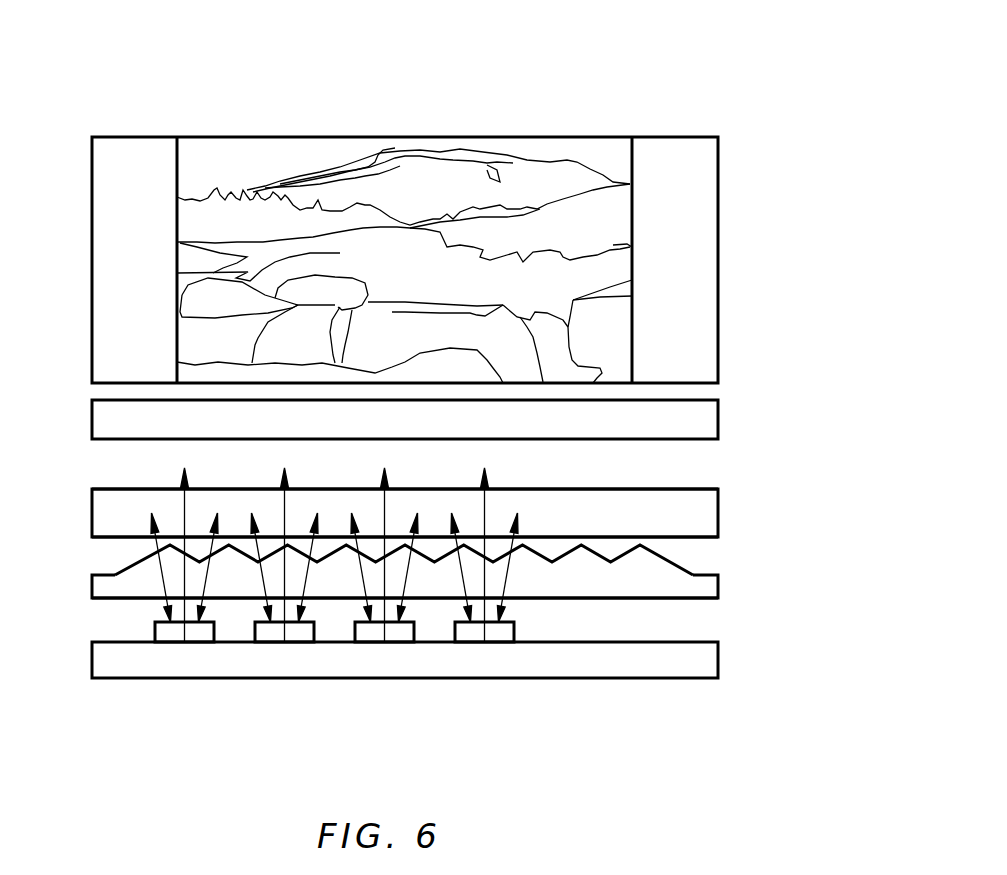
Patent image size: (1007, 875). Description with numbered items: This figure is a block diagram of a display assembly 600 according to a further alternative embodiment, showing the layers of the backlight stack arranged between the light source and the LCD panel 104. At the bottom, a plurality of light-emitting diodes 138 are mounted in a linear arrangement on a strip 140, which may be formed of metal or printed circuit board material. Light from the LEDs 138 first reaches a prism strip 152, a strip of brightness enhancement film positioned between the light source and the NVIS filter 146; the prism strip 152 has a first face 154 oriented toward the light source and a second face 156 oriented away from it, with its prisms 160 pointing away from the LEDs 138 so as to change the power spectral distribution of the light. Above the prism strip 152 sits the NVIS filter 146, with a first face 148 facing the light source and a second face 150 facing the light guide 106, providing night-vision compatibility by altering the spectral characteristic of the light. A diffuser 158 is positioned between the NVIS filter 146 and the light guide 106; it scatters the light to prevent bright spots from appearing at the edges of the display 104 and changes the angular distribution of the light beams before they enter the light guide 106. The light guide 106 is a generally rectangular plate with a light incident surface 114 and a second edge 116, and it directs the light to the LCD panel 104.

The display assembly 600 is at (190, 66).
The second edge 116 is at (352, 137).
The LCD panel 104 is at (578, 164).
The light guide plate 106 is at (698, 220).
The light incident surface 114 is at (130, 383).
The diffuser 158 is at (728, 409).
The NVIS filter 146 is at (728, 496).
The second face 150 is at (157, 488).
The first face 148 is at (110, 537).
The second face 156 is at (703, 572).
The prism strip 152 is at (730, 593).
The first face 154 is at (670, 602).
The prisms 160 is at (225, 565).
The light-emitting diodes 138 is at (187, 633).
The strip 140 is at (562, 670).